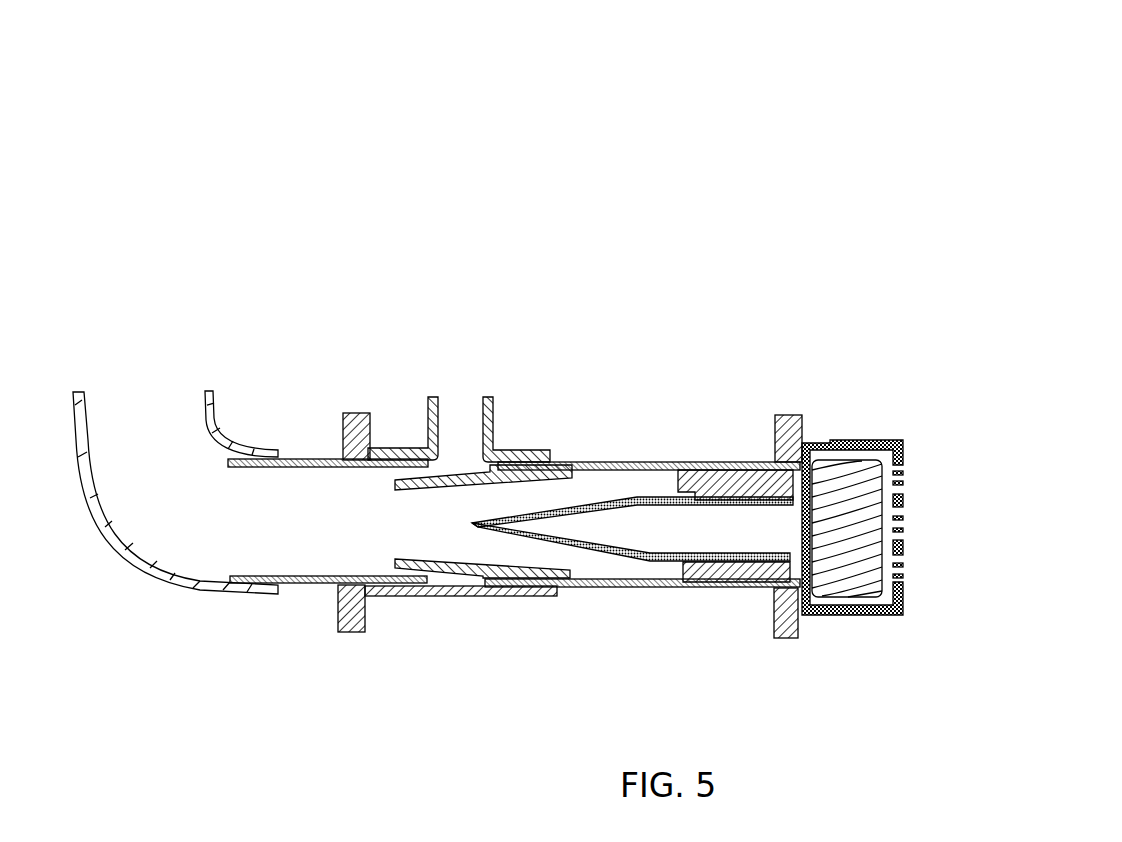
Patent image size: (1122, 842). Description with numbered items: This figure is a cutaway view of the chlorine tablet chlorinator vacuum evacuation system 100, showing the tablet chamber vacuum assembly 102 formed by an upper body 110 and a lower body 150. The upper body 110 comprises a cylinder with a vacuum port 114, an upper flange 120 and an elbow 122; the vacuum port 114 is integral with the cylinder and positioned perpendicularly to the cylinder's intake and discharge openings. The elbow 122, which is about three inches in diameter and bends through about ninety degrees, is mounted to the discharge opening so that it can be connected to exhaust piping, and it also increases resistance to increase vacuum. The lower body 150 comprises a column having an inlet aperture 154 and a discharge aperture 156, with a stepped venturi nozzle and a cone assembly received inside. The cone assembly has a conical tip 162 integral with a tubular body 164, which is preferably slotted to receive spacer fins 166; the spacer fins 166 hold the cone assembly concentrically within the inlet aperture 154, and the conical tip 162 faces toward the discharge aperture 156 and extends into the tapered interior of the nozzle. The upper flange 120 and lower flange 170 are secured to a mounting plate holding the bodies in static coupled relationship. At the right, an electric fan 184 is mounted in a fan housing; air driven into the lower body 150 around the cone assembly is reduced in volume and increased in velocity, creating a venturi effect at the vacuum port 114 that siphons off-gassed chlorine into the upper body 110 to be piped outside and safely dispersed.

The chlorine tablet chlorinator vacuum evacuation system 100 is at (650, 86).
The tablet chamber vacuum assembly 102 is at (674, 128).
The upper body 110 is at (409, 445).
The vacuum port 114 is at (499, 403).
The upper flange 120 is at (346, 635).
The elbow 122 is at (222, 413).
The lower body 150 is at (633, 460).
The inlet aperture 154 is at (798, 474).
The discharge aperture 156 is at (485, 589).
The conical tip 162 is at (545, 545).
The tubular body 164 is at (658, 559).
The spacer fins 166 is at (678, 572).
The lower flange 170 is at (782, 642).
The electric fan 184 is at (857, 456).